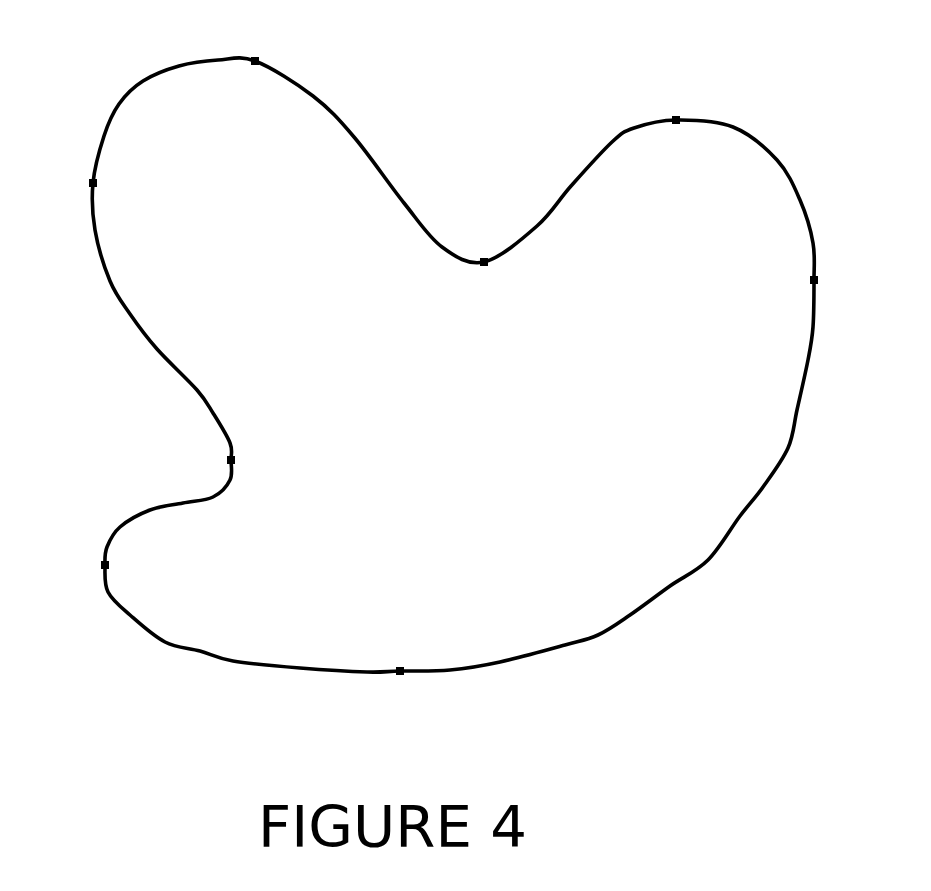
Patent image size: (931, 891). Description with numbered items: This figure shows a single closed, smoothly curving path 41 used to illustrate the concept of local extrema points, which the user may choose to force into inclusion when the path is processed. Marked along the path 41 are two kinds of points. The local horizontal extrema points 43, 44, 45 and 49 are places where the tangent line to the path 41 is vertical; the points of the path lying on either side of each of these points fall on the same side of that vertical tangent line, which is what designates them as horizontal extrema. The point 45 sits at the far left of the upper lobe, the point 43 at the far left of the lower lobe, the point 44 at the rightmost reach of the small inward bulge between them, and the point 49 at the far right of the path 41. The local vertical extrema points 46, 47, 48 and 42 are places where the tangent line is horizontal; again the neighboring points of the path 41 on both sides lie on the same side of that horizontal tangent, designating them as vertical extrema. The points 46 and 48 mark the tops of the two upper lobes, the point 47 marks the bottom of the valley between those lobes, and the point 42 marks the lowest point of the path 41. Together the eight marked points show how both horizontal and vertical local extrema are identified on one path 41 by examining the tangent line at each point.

The path 41 is at (522, 445).
The local vertical extremum point 42 is at (403, 699).
The local horizontal extremum point 43 is at (73, 565).
The local horizontal extremum point 44 is at (196, 462).
The local horizontal extremum point 45 is at (59, 184).
The local vertical extremum point 46 is at (253, 34).
The local vertical extremum point 47 is at (484, 230).
The local vertical extremum point 48 is at (674, 93).
The local horizontal extremum point 49 is at (850, 280).